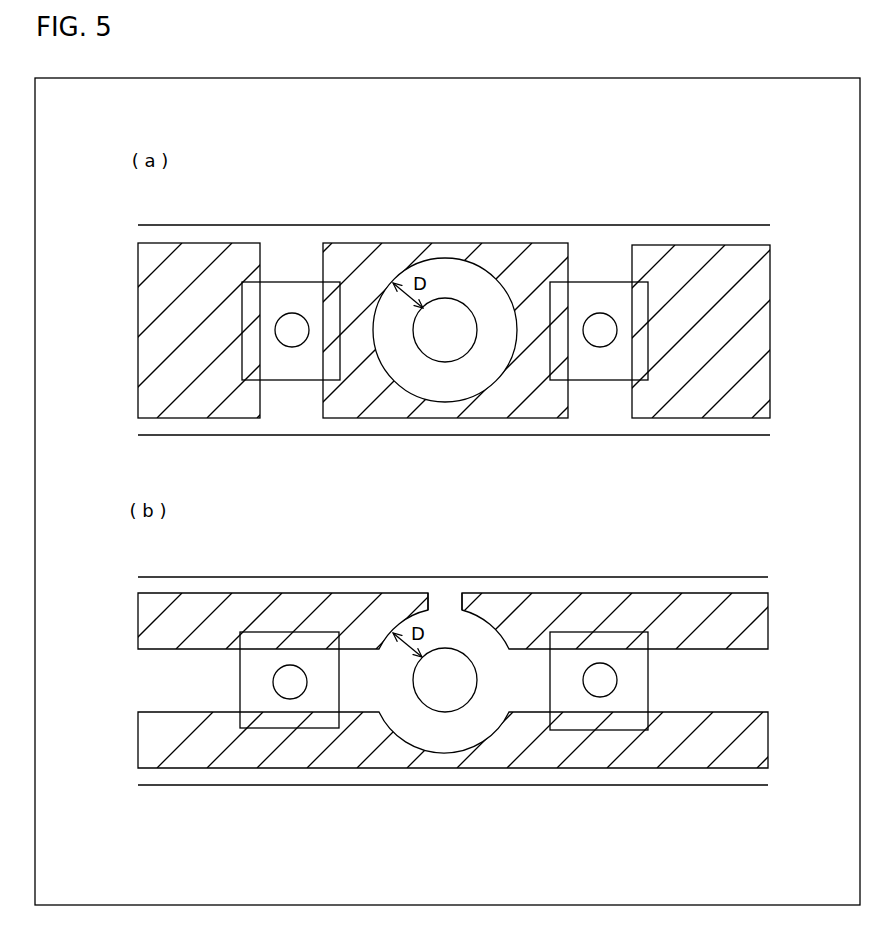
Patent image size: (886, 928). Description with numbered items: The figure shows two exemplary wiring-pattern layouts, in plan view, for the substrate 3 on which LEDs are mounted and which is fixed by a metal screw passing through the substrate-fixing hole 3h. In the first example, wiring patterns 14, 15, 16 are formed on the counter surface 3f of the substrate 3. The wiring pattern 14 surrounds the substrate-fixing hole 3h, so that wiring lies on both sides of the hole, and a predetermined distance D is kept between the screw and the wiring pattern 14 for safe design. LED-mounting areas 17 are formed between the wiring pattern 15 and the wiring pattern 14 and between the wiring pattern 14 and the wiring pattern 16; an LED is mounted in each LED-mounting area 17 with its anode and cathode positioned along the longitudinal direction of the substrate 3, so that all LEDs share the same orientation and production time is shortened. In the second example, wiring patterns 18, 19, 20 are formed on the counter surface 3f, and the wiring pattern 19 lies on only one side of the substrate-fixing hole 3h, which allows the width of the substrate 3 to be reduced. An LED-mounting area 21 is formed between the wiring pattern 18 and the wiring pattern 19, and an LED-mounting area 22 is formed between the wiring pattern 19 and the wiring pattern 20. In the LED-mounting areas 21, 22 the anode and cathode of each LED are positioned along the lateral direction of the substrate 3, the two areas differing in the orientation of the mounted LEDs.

The substrate 3 is at (766, 202).
The counter surface 3f is at (602, 410).
The substrate-fixing hole 3h is at (448, 337).
The wiring pattern 14 is at (492, 260).
The wiring pattern 15 is at (200, 258).
The wiring pattern 16 is at (684, 260).
The LED-mounting area 17 is at (292, 290).
The wiring pattern 18 is at (283, 610).
The wiring pattern 19 is at (603, 760).
The wiring pattern 20 is at (684, 608).
The LED-mounting area 21 is at (258, 683).
The LED-mounting area 22 is at (635, 683).